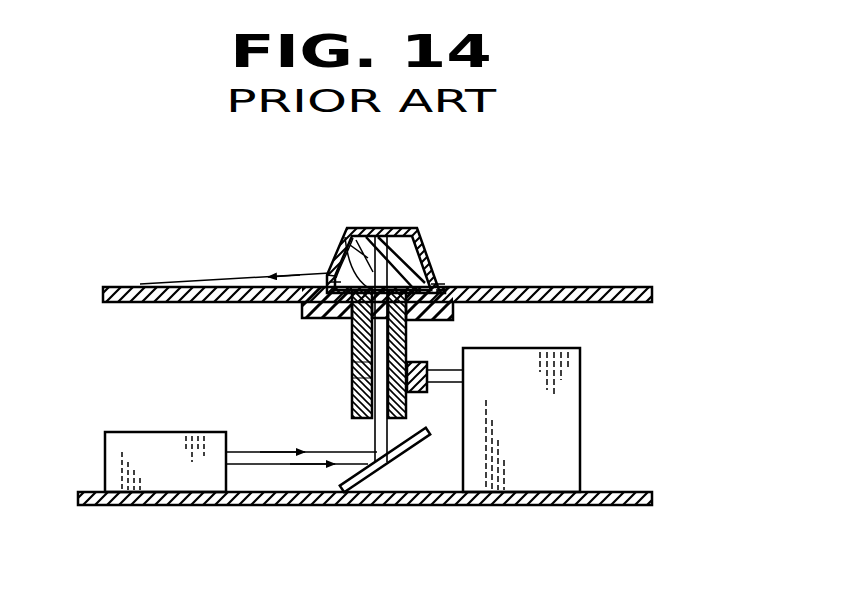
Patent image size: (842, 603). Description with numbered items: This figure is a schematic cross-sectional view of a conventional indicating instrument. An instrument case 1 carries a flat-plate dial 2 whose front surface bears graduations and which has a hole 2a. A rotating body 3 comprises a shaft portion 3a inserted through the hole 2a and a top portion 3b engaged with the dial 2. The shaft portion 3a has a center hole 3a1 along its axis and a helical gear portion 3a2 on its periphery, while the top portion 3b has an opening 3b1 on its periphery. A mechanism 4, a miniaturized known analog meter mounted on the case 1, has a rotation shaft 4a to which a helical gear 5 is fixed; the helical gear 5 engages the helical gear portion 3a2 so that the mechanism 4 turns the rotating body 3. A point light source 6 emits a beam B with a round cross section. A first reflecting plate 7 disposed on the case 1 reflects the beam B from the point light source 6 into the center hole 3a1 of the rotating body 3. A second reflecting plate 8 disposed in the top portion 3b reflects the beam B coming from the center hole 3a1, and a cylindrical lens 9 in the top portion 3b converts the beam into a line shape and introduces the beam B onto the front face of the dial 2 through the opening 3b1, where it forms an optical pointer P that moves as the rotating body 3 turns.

The instrument case 1 is at (608, 507).
The dial 2 is at (175, 302).
The hole 2a is at (355, 321).
The rotating body 3 is at (360, 322).
The shaft portion 3a is at (351, 386).
The center hole 3a1 is at (381, 418).
The helical gear portion 3a2 is at (352, 370).
The top portion 3b is at (402, 232).
The opening 3b1 is at (337, 277).
The mechanism 4 is at (572, 422).
The rotation shaft 4a is at (447, 383).
The helical gear 5 is at (420, 371).
The point light source 6 is at (158, 440).
The first reflecting plate 7 is at (372, 475).
The second reflecting plate 8 is at (433, 276).
The cylindrical lens 9 is at (353, 247).
The optical pointer P is at (207, 287).
The beam B is at (275, 460).